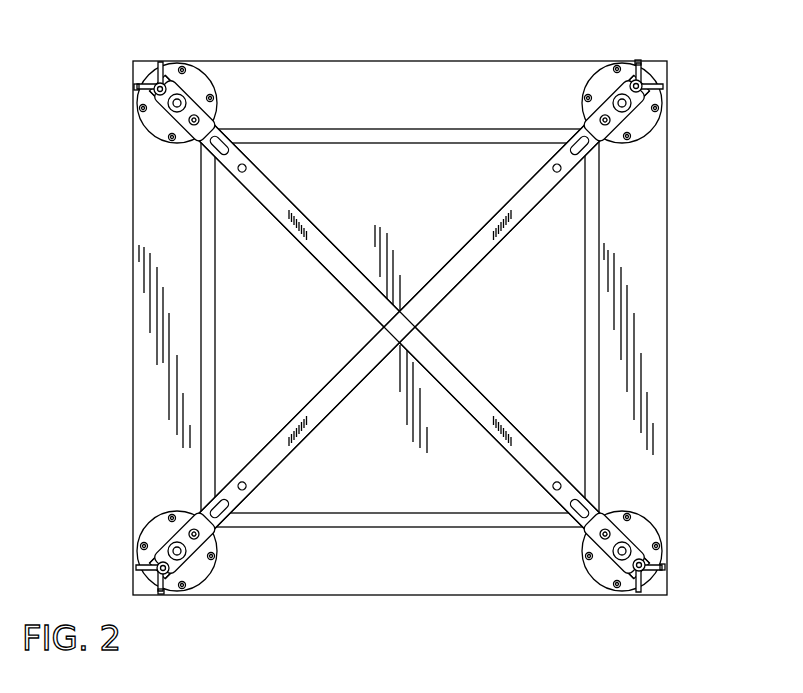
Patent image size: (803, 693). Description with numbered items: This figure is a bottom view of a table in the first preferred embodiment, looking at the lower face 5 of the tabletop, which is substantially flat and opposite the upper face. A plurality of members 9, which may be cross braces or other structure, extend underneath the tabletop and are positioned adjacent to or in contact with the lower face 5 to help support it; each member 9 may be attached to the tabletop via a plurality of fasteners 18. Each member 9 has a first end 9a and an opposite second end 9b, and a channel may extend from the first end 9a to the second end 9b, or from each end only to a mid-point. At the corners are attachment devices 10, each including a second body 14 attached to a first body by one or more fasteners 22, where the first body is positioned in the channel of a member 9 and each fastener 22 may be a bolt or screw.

The lower face 5 is at (668, 355).
The member 9 is at (291, 200).
The first end 9a is at (212, 527).
The second end 9b is at (610, 132).
The attachment device 10 is at (153, 140).
The second body 14 is at (213, 90).
The fastener 18 is at (240, 168).
The fastener 22 is at (663, 113).